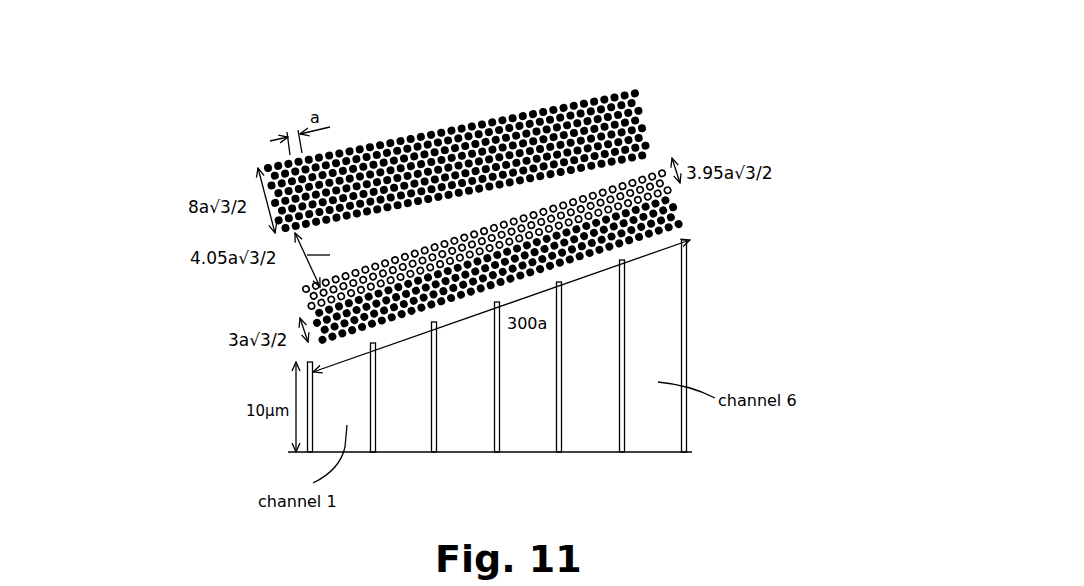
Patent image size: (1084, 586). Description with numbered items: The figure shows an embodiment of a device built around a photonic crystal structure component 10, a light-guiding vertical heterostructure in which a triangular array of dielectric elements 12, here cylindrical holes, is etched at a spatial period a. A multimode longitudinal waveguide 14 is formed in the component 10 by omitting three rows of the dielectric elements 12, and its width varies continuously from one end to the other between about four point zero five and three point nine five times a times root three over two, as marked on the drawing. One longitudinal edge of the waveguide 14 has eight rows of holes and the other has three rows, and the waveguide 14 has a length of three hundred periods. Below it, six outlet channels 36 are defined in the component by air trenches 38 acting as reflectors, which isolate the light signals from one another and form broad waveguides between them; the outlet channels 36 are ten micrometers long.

The photonic crystal structure component 10 is at (628, 78).
The dielectric elements 12 is at (423, 137).
The multimode longitudinal waveguide 14 is at (307, 256).
The outlet channels 36 is at (387, 432).
The air trenches 38 is at (433, 435).